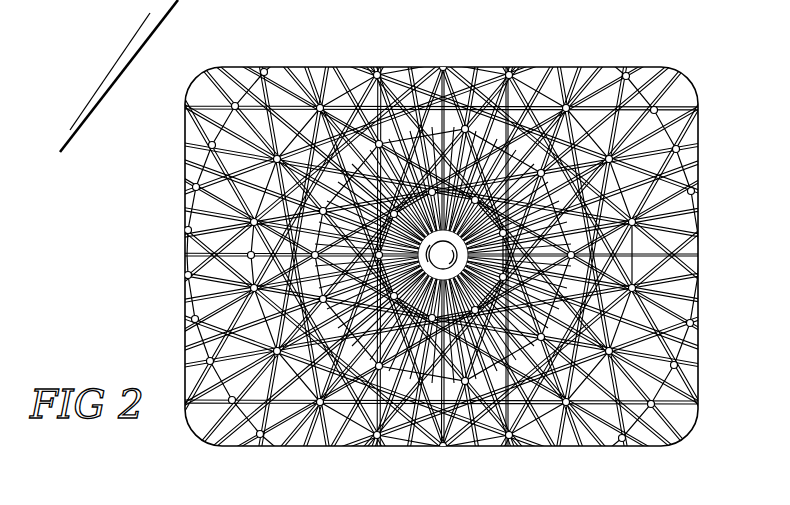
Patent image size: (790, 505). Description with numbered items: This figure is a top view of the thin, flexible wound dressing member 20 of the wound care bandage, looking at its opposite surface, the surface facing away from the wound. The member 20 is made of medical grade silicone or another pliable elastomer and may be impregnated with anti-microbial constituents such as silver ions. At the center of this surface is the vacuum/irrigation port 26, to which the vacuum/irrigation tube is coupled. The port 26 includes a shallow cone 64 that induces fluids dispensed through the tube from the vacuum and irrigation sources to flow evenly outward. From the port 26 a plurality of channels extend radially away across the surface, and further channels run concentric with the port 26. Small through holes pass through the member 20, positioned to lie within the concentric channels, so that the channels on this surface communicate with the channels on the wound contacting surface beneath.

The wound dressing member 20 is at (628, 50).
The central vacuum/irrigation port 26 is at (421, 262).
The shallow cone 64 is at (452, 270).